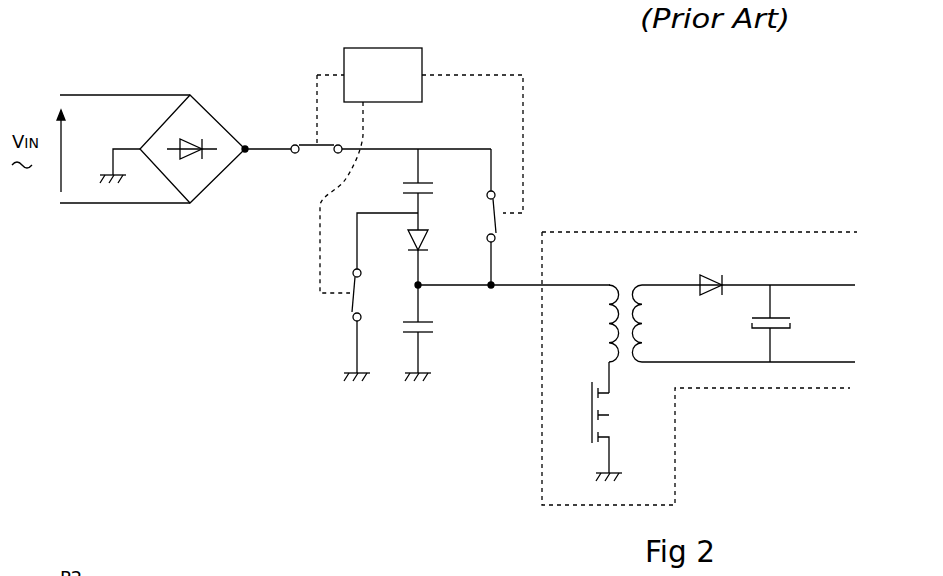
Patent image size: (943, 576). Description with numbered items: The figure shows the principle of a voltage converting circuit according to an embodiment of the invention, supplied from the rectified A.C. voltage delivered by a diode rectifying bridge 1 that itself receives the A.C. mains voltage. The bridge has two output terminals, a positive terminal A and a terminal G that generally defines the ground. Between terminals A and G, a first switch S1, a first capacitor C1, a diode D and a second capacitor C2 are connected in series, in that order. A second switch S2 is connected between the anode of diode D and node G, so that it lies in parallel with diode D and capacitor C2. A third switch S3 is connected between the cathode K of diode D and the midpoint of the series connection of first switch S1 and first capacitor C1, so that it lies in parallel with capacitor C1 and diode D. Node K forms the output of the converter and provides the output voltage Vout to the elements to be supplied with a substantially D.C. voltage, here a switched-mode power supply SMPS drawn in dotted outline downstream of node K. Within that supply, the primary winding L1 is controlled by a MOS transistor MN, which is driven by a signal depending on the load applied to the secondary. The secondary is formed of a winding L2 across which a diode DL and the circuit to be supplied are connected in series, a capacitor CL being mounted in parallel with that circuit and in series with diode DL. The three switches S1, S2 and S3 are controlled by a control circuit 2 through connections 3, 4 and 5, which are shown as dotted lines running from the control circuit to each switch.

The diode rectifying bridge 1 is at (217, 117).
The control circuit 2 is at (377, 58).
The connection 3 is at (330, 72).
The connection 4 is at (318, 247).
The connection 5 is at (523, 112).
The output terminal G is at (115, 166).
The output terminal A is at (247, 152).
The first switch S1 is at (316, 158).
The second switch S2 is at (343, 325).
The third switch S3 is at (481, 217).
The first capacitor C1 is at (402, 189).
The second capacitor C2 is at (402, 333).
The diode D is at (408, 257).
The cathode node K is at (421, 278).
The output voltage Vout is at (486, 296).
The switched-mode power supply SMPS is at (667, 245).
The primary winding L1 is at (611, 311).
The secondary winding L2 is at (642, 337).
The diode DL is at (709, 271).
The capacitor CL is at (787, 323).
The MOS transistor MN is at (587, 421).